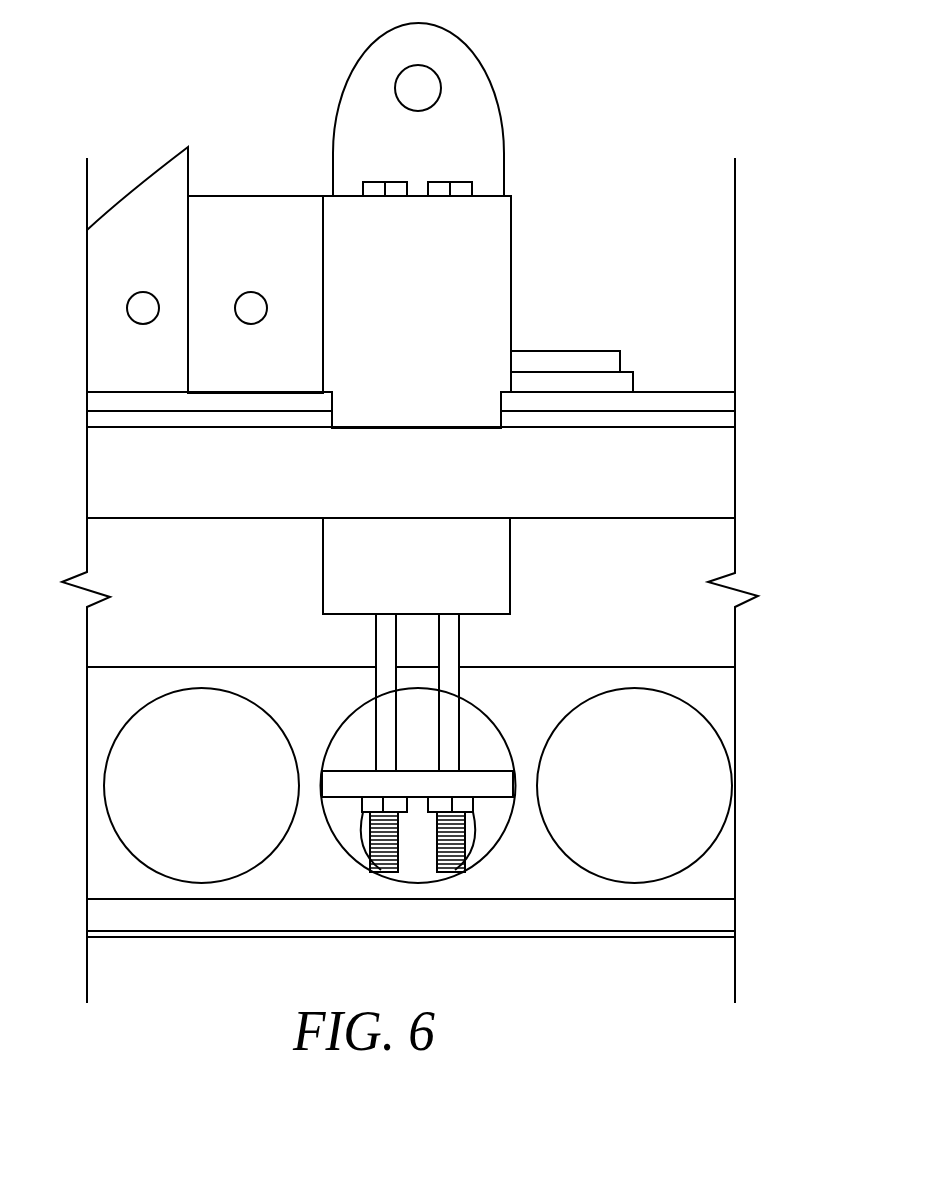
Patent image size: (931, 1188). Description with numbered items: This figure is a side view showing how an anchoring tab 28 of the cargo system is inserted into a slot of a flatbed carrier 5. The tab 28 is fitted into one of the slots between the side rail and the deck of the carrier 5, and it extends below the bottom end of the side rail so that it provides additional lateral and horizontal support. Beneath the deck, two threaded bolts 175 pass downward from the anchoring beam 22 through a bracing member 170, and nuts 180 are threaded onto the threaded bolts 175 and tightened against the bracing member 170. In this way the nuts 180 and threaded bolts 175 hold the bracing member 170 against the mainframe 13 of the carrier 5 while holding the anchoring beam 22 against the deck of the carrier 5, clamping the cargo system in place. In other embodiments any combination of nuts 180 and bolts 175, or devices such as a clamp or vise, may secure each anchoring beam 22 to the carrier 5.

The flatbed carrier 5 is at (757, 419).
The mainframe 13 is at (722, 693).
The anchoring beam 22 is at (507, 233).
The anchoring tab 28 is at (337, 573).
The bracing member 170 is at (495, 770).
The threaded bolts 175 is at (375, 659).
The nuts 180 is at (352, 856).